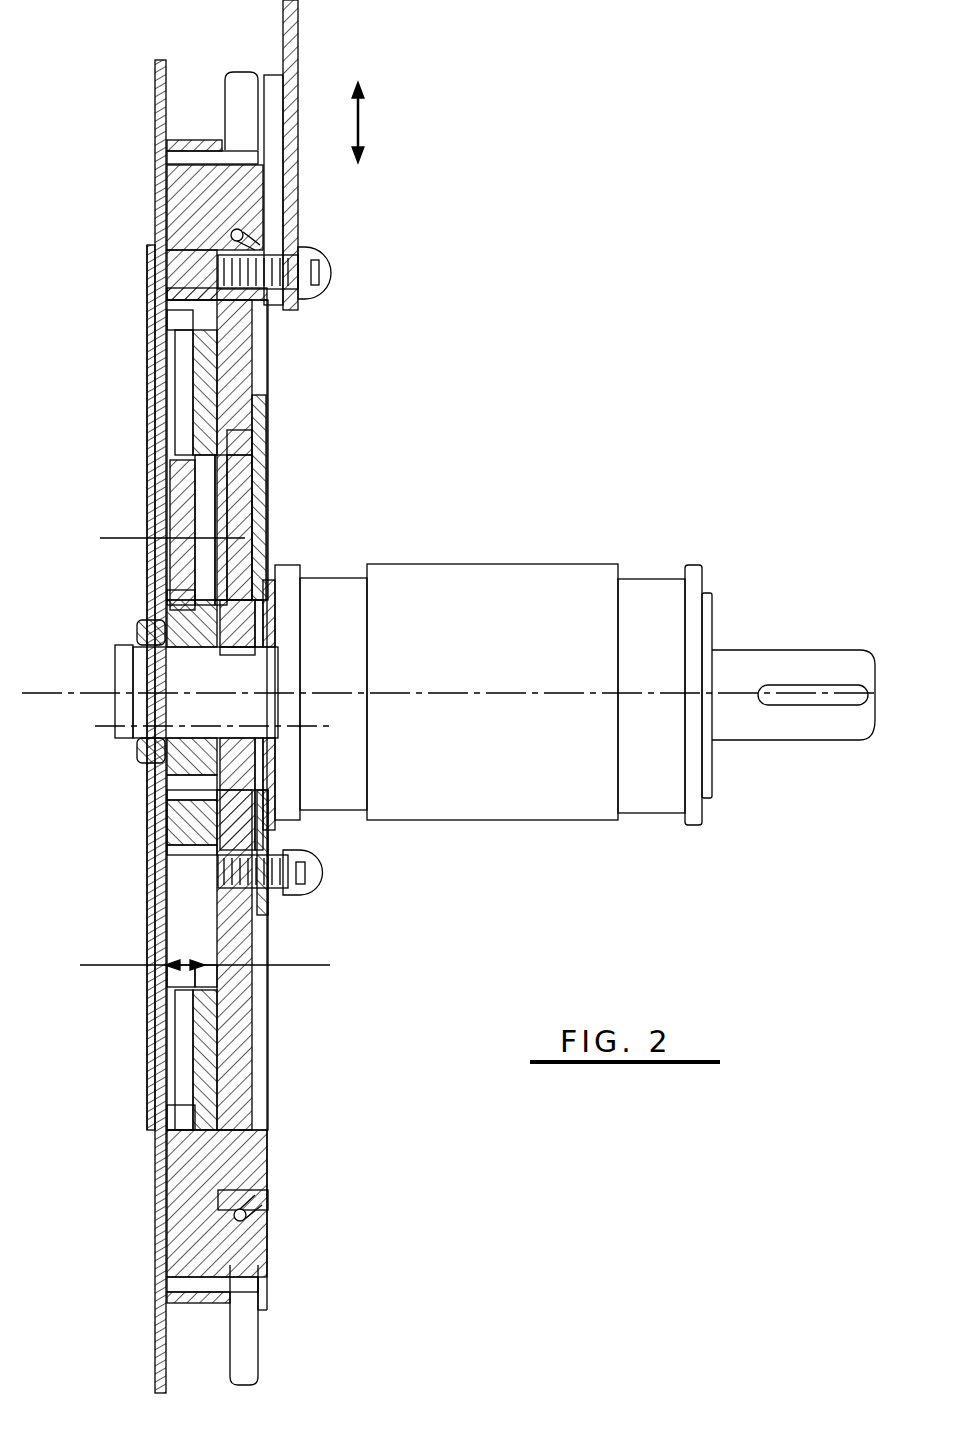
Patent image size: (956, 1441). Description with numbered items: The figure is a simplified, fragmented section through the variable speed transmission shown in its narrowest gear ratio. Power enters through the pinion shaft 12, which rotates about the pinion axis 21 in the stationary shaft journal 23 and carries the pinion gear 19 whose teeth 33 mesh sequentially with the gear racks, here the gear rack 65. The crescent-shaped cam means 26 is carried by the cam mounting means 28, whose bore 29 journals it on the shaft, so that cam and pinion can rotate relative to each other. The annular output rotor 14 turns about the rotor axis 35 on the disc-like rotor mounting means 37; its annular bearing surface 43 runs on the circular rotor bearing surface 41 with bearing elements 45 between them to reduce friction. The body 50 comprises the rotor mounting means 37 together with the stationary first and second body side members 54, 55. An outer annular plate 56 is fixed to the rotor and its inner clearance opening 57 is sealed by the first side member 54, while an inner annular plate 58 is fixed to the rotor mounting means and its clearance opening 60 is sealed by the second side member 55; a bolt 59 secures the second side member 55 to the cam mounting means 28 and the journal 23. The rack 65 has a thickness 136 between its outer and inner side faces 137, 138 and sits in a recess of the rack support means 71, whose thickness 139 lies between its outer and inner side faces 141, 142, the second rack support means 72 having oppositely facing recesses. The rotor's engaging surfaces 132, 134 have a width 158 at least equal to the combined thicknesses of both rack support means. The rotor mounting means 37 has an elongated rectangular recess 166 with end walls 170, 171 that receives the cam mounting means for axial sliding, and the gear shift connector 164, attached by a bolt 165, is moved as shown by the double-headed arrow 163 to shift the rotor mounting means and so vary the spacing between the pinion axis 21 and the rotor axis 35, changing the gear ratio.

The pinion shaft 12 is at (115, 660).
The output rotor 14 is at (188, 138).
The pinion gear 19 is at (187, 652).
The pinion axis 21 is at (66, 696).
The stationary shaft journal 23 is at (338, 570).
The cam means 26 is at (195, 822).
The cam mounting means 28 is at (245, 790).
The bore 29 is at (245, 658).
The teeth of the pinion 33 is at (225, 610).
The rotor axis 35 is at (328, 722).
The rotor mounting means 37 is at (250, 333).
The rotor bearing surface 41 is at (232, 230).
The annular bearing surface 43 is at (270, 268).
The bearing elements 45 is at (255, 242).
The body 50 is at (382, 436).
The first body side member 54 is at (150, 420).
The second body side member 55 is at (276, 560).
The outer annular plate 56 is at (150, 152).
The inner clearance opening 57 is at (155, 442).
The inner annular plate 58 is at (268, 488).
The bolt 59 is at (308, 872).
The clearance opening 60 is at (250, 637).
The gear rack 65 is at (167, 590).
The rack support means 71 is at (166, 488).
The second rack support means 72 is at (212, 395).
The engaging surface 132 is at (170, 345).
The engaging surface 134 is at (180, 1108).
The thickness of the rack 136 is at (122, 542).
The outer side face 137 is at (168, 512).
The inner side face 138 is at (202, 515).
The thickness of the rack support means 139 is at (120, 962).
The outer side face 141 is at (166, 985).
The inner side face 142 is at (207, 1000).
The width 158 is at (172, 378).
The double-headed arrow 163 is at (362, 123).
The gear shift connector 164 is at (301, 96).
The bolt 165 is at (320, 282).
The rectangular recess 166 is at (235, 470).
The recess end wall 170 is at (262, 440).
The recess end wall 171 is at (268, 915).